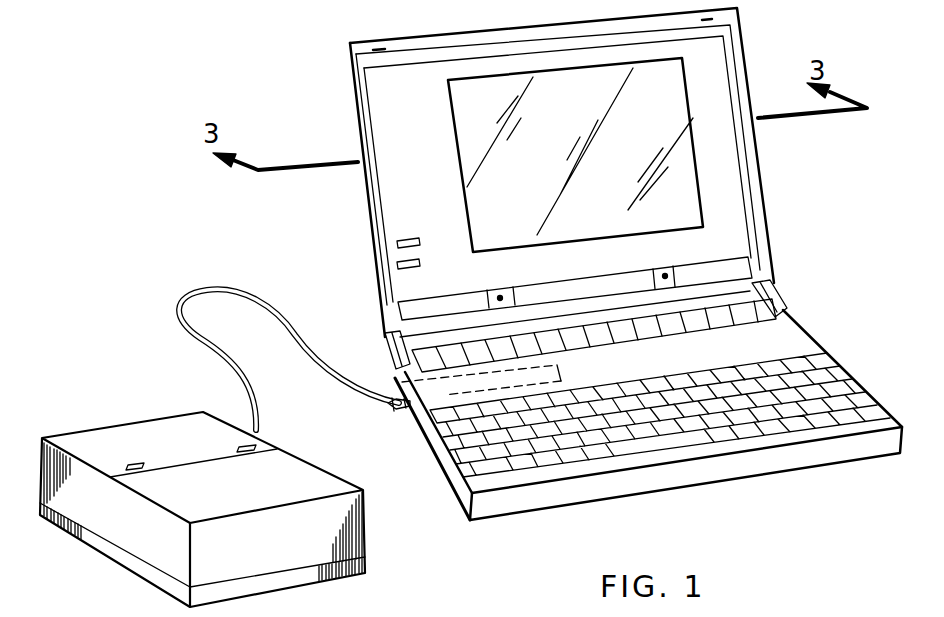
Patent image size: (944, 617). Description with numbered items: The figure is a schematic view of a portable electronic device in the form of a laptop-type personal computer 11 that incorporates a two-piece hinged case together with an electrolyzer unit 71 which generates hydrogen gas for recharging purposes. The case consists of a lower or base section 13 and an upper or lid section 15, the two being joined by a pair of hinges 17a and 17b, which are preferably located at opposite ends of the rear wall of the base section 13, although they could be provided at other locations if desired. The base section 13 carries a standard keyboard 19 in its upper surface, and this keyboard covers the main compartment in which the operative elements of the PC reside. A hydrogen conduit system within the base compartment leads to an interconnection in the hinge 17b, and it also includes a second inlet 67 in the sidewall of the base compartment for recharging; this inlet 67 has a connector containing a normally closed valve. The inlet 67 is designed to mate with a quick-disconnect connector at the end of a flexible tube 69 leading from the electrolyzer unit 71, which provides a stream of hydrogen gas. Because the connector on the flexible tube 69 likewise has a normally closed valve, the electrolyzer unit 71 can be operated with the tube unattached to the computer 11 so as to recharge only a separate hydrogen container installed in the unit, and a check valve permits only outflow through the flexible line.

The personal computer 11 is at (421, 488).
The base section 13 is at (418, 428).
The lid section 15 is at (738, 84).
The hinge 17a is at (382, 312).
The hinge 17b is at (774, 302).
The keyboard 19 is at (463, 440).
The second inlet 67 is at (403, 413).
The flexible tube 69 is at (190, 290).
The electrolyzer unit 71 is at (297, 478).